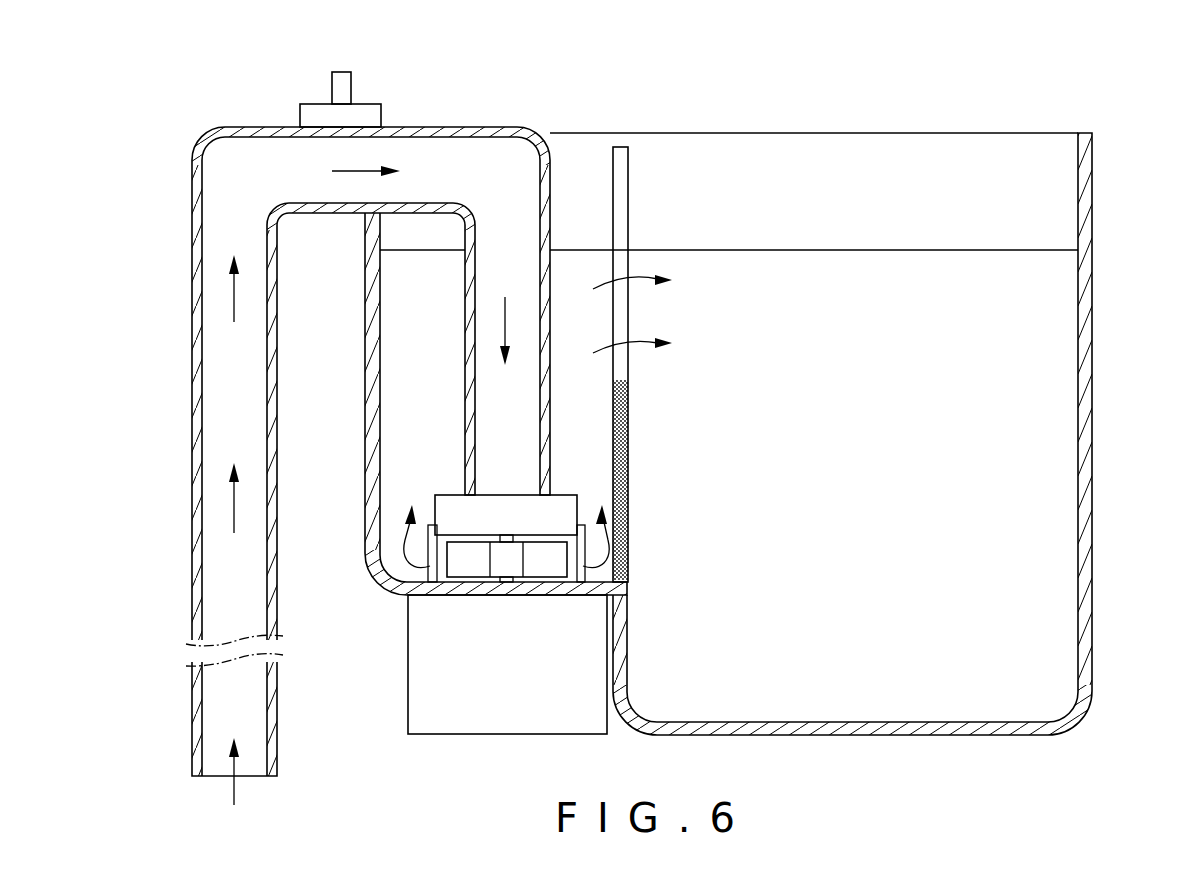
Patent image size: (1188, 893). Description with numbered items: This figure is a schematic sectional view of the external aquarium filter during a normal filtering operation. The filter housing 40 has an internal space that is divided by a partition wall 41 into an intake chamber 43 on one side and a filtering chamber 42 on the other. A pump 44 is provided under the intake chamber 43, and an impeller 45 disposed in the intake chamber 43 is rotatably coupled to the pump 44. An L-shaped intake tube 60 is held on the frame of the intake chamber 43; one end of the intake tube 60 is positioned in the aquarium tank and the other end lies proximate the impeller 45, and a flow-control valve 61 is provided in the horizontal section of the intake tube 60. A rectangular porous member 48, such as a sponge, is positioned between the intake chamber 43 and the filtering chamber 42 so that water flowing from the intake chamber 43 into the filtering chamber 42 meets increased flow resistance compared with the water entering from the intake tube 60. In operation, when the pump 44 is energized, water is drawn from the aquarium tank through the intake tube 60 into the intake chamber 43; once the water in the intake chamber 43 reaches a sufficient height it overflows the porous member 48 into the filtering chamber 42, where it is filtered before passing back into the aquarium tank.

The filter housing 40 is at (1092, 402).
The partition wall 41 is at (621, 155).
The filtering chamber 42 is at (938, 685).
The intake chamber 43 is at (380, 428).
The pump 44 is at (487, 727).
The impeller 45 is at (460, 563).
The porous member 48 is at (628, 460).
The intake tube 60 is at (192, 427).
The flow-control valve 61 is at (335, 93).